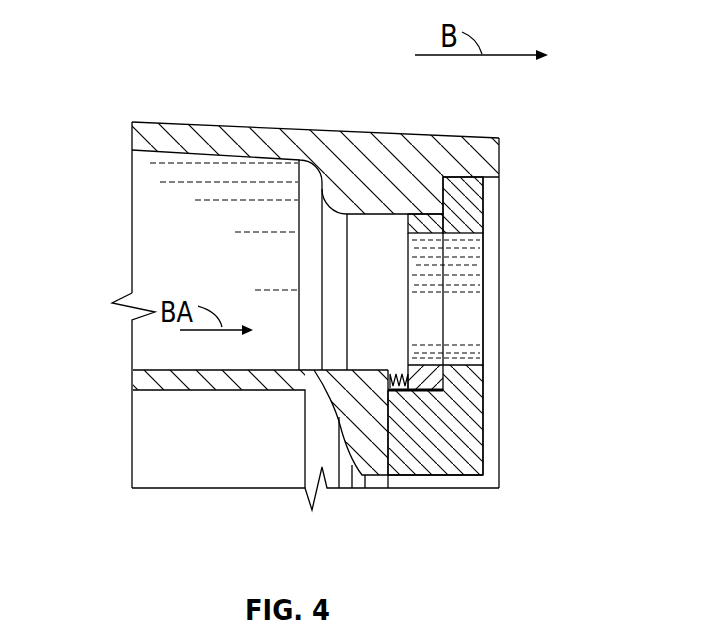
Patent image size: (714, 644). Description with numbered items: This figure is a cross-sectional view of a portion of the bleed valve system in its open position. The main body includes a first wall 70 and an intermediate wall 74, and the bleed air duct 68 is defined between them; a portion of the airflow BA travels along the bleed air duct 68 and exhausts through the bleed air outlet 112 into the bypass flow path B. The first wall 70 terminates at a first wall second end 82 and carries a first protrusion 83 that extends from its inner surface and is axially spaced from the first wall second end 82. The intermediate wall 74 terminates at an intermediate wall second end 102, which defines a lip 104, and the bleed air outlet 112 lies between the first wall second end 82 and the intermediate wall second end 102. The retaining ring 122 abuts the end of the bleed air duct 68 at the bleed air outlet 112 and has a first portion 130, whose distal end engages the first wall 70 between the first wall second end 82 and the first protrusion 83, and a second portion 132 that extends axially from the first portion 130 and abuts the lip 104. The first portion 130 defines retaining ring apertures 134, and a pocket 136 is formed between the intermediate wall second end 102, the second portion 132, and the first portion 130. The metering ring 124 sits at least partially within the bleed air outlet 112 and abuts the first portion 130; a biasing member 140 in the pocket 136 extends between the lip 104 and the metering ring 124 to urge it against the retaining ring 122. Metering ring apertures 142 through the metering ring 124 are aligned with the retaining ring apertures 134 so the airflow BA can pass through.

The bleed air duct 68 is at (143, 194).
The first wall 70 is at (285, 122).
The intermediate wall 74 is at (192, 405).
The first wall second end 82 is at (482, 153).
The first protrusion 83 is at (388, 202).
The intermediate wall second end 102 is at (293, 387).
The lip 104 is at (368, 428).
The bleed air outlet 112 is at (340, 366).
The retaining ring 122 is at (497, 227).
The metering ring 124 is at (390, 227).
The first portion 130 is at (465, 204).
The second portion 132 is at (457, 425).
The retaining ring apertures 134 is at (463, 233).
The pocket 136 is at (398, 405).
The biasing member 140 is at (397, 362).
The metering ring apertures 142 is at (426, 235).